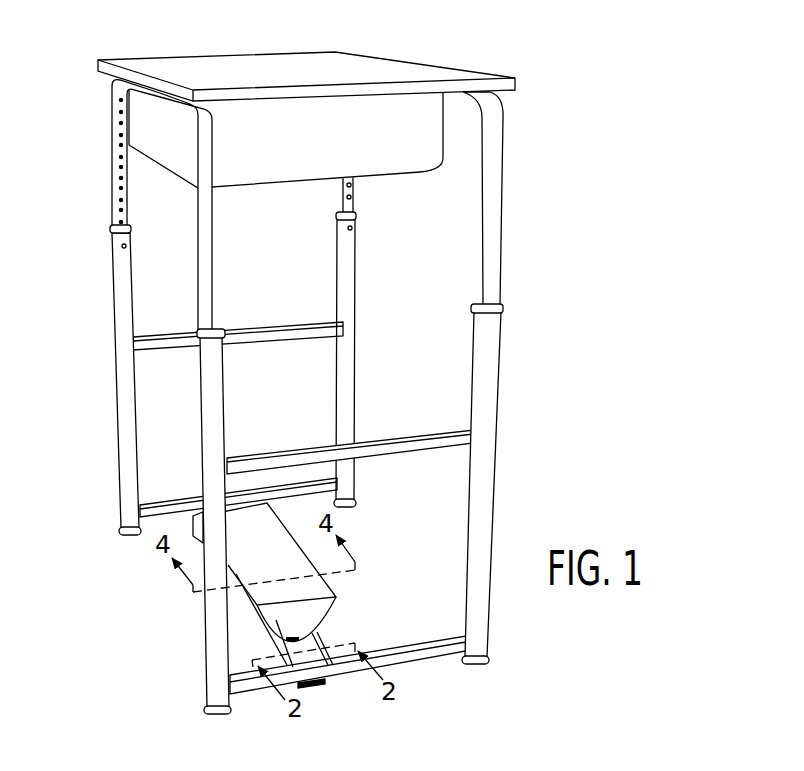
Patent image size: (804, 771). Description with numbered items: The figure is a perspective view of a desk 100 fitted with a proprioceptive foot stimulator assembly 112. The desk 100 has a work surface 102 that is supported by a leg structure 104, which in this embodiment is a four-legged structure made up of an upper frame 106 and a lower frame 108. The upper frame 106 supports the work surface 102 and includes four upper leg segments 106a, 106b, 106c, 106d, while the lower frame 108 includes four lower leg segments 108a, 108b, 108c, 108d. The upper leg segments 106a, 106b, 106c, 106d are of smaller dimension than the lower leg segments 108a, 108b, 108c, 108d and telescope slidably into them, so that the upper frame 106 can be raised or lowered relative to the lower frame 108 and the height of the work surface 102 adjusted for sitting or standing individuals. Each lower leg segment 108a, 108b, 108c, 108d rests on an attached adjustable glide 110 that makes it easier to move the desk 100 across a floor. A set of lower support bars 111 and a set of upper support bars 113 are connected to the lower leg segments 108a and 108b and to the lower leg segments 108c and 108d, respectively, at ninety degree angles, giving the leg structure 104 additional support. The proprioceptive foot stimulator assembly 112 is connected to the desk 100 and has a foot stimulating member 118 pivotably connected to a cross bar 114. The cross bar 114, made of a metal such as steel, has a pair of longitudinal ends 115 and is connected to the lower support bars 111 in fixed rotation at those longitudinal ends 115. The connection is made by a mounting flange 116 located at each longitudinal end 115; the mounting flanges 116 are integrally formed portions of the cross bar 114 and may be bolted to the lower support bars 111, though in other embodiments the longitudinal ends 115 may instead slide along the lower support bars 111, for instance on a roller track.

The desk 100 is at (429, 43).
The work surface 102 is at (224, 68).
The leg structure 104 is at (519, 339).
The upper frame 106 is at (502, 195).
The upper leg segment 106a is at (121, 185).
The upper leg segment 106b is at (355, 203).
The upper leg segment 106c is at (207, 238).
The upper leg segment 106d is at (493, 262).
The lower frame 108 is at (484, 461).
The lower leg segment 108a is at (130, 422).
The lower leg segment 108b is at (348, 352).
The lower leg segment 108c is at (213, 393).
The lower leg segment 108d is at (488, 505).
The adjustable glide 110 is at (131, 537).
The lower support bars 111 is at (180, 503).
The proprioceptive foot stimulator assembly 112 is at (334, 628).
The upper support bars 113 is at (284, 337).
The cross bar 114 is at (273, 643).
The longitudinal ends 115 is at (319, 658).
The mounting flange 116 is at (318, 689).
The foot stimulating member 118 is at (333, 598).